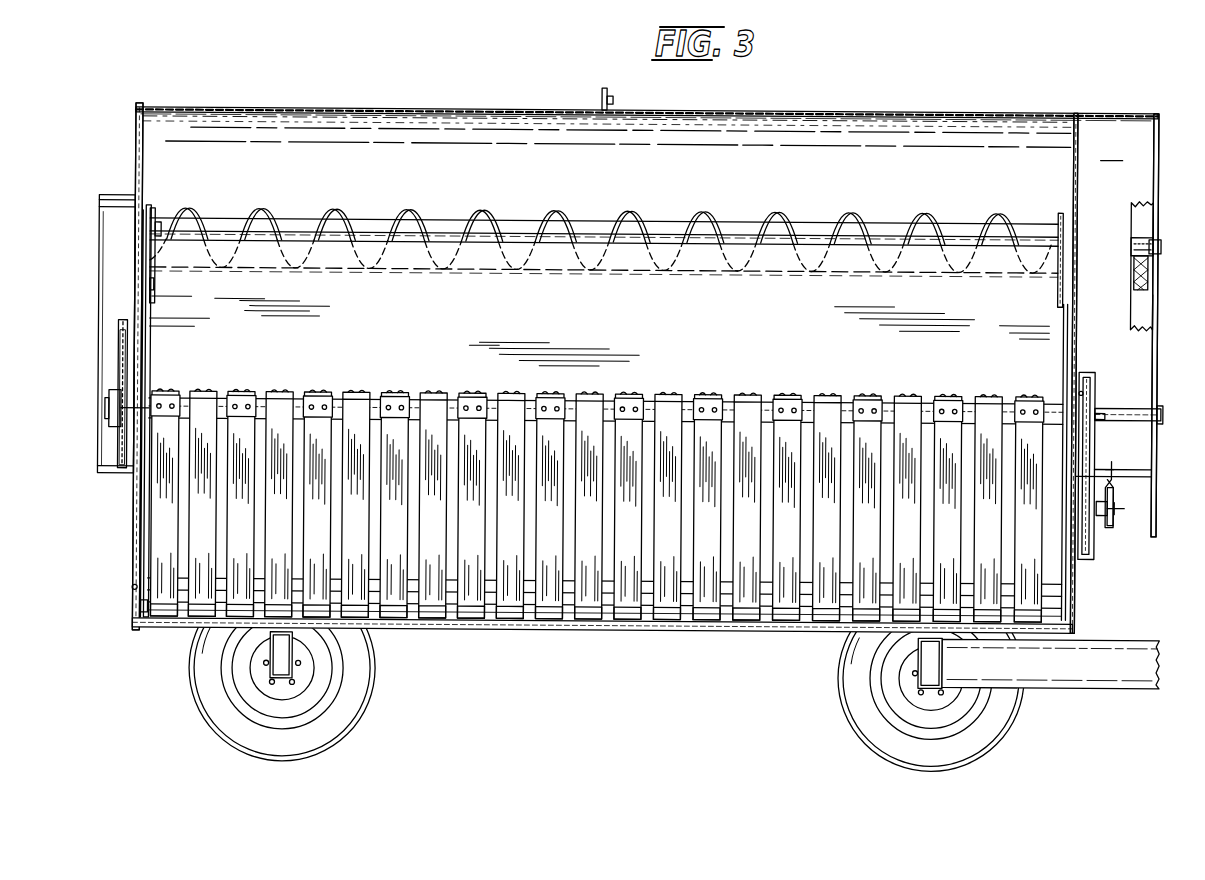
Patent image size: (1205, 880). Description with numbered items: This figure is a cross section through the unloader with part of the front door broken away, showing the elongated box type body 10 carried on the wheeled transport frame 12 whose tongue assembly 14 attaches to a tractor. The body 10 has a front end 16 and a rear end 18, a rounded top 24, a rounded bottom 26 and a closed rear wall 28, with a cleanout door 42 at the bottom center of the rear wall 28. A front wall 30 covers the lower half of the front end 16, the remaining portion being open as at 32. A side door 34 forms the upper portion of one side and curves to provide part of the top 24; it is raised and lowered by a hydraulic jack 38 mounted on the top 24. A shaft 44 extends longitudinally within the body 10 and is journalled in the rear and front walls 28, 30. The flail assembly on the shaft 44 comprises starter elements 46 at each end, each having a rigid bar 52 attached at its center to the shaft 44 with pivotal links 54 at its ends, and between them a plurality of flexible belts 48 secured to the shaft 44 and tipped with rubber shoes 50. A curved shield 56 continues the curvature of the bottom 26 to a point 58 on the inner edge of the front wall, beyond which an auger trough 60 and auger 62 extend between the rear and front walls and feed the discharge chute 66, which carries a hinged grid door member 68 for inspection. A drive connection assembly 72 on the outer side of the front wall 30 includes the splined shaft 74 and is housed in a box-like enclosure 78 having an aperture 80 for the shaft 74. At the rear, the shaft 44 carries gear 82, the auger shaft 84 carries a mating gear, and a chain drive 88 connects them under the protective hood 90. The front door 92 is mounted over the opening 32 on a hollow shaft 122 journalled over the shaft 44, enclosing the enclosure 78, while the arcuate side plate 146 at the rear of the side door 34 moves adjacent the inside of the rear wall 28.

The box type body 10 is at (440, 90).
The wheeled transport frame 12 is at (1080, 690).
The tongue assembly 14 is at (791, 106).
The front end 16 is at (1107, 630).
The rear end 18 is at (116, 567).
The rounded top 24 is at (320, 110).
The rounded bottom 26 is at (676, 632).
The rear wall 28 is at (135, 130).
The front wall 30 is at (1078, 366).
The opening 32 is at (1076, 195).
The side door 34 is at (931, 125).
The hydraulic jack 38 is at (601, 84).
The cleanout door 42 is at (128, 612).
The shaft 44 is at (110, 410).
The starter elements 46 is at (153, 325).
The flexible belts 48 is at (395, 612).
The shoe 50 is at (470, 615).
The rigid bar 52 is at (146, 376).
The pivotal links 54 is at (160, 224).
The curved shield 56 is at (574, 316).
The point 58 is at (672, 220).
The auger trough 60 is at (825, 288).
The auger 62 is at (560, 222).
The discharge chute 66 is at (1153, 330).
The door member 68 is at (1140, 300).
The drive connection assembly 72 is at (1078, 392).
The splined shaft 74 is at (1120, 510).
The box-like enclosure 78 is at (1098, 550).
The aperture 80 is at (1100, 522).
The gear 82 is at (118, 445).
The auger shaft 84 is at (222, 230).
The chain drive 88 is at (120, 345).
The protective hood 90 is at (100, 253).
The front door 92 is at (1135, 160).
The hollow shaft 122 is at (1119, 406).
The arcuate side plate 146 is at (152, 283).